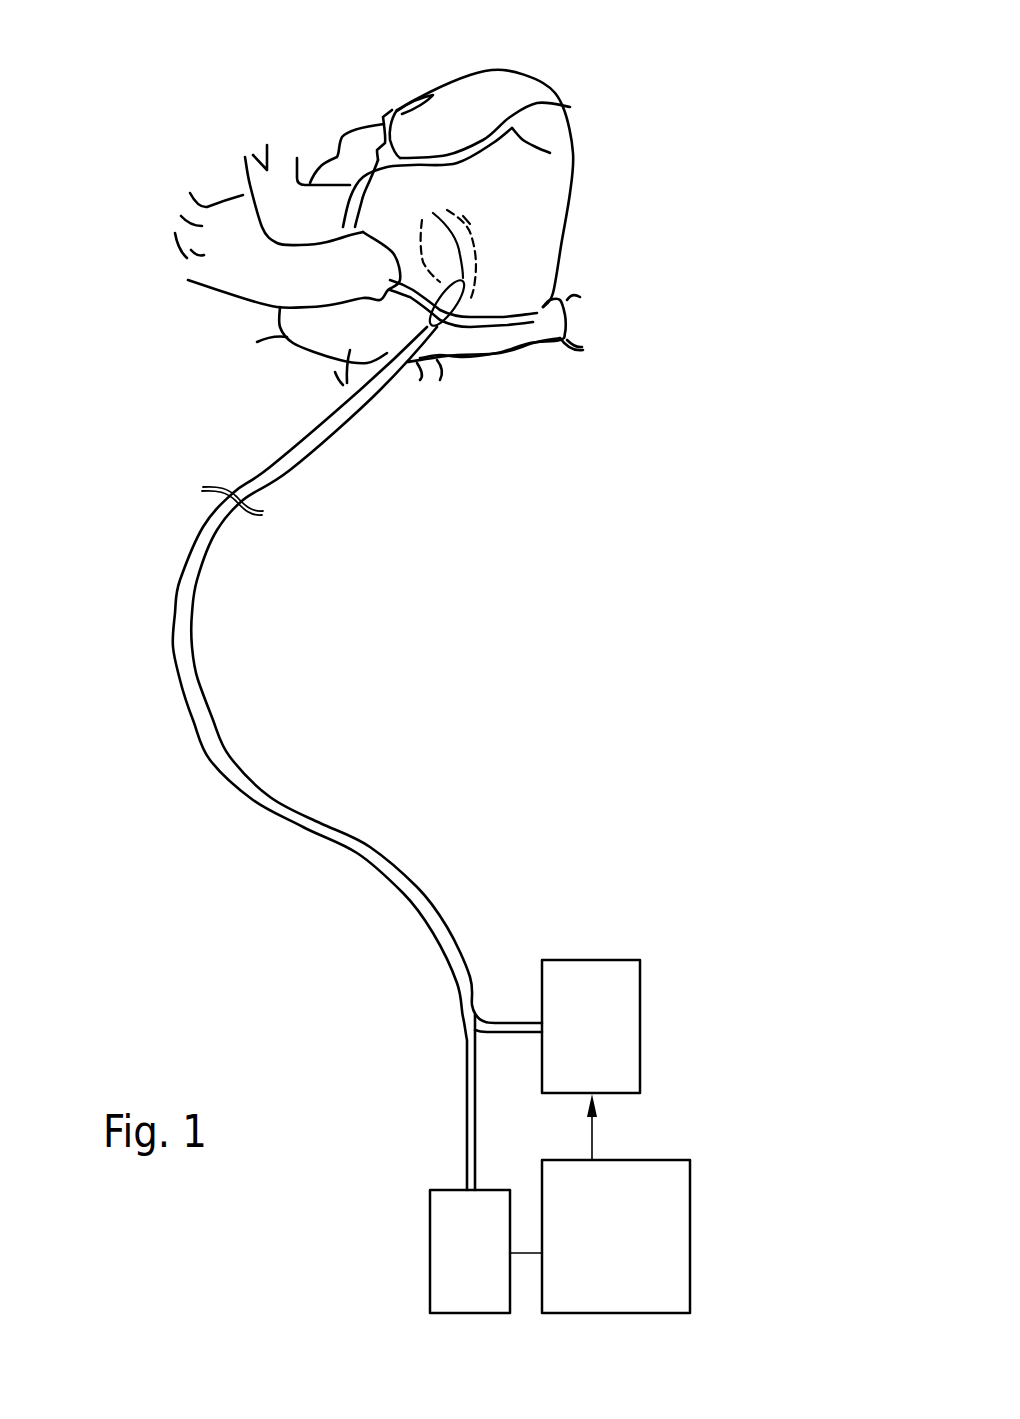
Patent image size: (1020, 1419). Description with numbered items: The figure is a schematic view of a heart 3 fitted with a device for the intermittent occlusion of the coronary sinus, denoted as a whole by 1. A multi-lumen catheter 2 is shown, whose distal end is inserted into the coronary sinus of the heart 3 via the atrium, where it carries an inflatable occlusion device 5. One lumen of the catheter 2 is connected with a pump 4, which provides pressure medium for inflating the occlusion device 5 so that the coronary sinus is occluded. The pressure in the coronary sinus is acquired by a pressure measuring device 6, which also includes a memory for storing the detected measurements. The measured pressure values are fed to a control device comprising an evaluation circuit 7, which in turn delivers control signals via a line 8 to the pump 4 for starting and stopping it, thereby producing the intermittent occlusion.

The device for the intermittent occlusion of the coronary sinus 1 is at (492, 690).
The multi-lumen catheter 2 is at (417, 337).
The heart 3 is at (330, 79).
The pump 4 is at (641, 1050).
The occlusion device 5 is at (455, 297).
The pressure measuring device 6 is at (430, 1253).
The evaluation circuit 7 is at (691, 1275).
The line 8 is at (592, 1138).